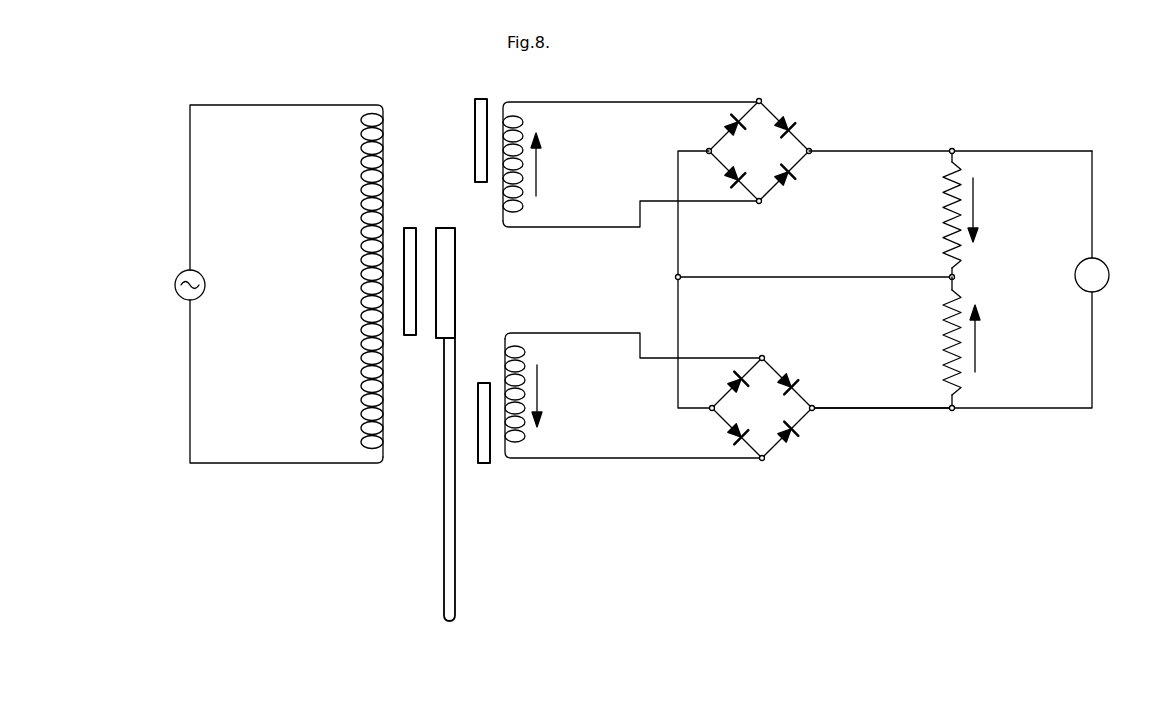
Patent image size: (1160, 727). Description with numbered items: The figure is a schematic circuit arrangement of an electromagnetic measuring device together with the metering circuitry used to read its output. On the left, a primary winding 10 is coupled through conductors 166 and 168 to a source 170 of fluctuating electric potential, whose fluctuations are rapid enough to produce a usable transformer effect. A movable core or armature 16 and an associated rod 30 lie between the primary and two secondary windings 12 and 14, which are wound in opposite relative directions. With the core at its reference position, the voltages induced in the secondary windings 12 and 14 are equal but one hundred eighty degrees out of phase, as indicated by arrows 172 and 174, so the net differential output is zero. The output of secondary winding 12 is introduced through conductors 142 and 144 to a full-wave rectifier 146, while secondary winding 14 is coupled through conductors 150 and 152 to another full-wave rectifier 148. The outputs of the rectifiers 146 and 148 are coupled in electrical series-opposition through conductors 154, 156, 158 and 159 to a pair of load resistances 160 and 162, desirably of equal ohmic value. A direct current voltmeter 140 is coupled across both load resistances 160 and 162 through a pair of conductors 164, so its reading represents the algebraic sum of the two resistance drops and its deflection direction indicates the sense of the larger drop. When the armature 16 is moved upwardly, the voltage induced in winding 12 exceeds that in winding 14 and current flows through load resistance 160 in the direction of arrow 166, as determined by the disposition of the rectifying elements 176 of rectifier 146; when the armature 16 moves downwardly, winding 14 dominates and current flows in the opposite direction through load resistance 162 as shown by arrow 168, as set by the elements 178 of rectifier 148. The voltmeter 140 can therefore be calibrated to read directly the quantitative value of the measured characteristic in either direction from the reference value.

The primary winding 10 is at (362, 320).
The secondary winding 12 is at (522, 122).
The secondary winding 14 is at (524, 444).
The movable core 16 is at (445, 228).
The movable rod 30 is at (455, 497).
The direct current voltmeter 140 is at (1106, 266).
The conductor 142 is at (592, 102).
The conductor 144 is at (612, 226).
The full-wave rectifier 146 is at (746, 159).
The full-wave rectifier 148 is at (749, 416).
The conductor 150 is at (565, 336).
The conductor 152 is at (642, 458).
The conductor 154 is at (868, 151).
The conductor 156 is at (779, 277).
The conductor 158 is at (884, 408).
The conductor 159 is at (678, 248).
The load resistance 160 is at (946, 211).
The load resistance 162 is at (946, 348).
The conductors 164 is at (998, 151).
The conductor / arrow 166 is at (277, 105).
The conductor / arrow 168 is at (277, 463).
The source of fluctuating electric potential 170 is at (203, 278).
The arrow 172 is at (539, 167).
The arrow 174 is at (540, 397).
The rectifying elements 176 is at (790, 122).
The rectifying elements 178 is at (792, 377).